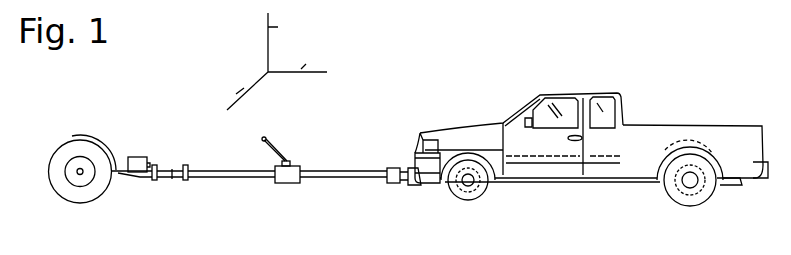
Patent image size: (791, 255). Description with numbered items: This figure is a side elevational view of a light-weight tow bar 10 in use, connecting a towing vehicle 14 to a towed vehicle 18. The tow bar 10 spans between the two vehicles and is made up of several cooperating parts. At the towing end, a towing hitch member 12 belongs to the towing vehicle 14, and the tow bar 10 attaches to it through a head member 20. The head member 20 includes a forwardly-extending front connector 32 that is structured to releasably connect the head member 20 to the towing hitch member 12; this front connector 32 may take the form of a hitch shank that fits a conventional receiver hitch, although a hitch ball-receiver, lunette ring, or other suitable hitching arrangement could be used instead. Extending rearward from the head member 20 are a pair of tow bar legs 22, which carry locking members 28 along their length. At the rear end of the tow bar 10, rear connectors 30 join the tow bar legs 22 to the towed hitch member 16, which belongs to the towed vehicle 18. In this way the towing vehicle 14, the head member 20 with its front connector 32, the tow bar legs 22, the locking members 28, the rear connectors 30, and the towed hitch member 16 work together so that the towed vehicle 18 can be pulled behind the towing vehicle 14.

The tow bar 10 is at (381, 64).
The towing hitch member 12 is at (139, 180).
The towing vehicle 14 is at (148, 105).
The towed hitch member 16 is at (417, 185).
The towed vehicle 18 is at (553, 152).
The head member 20 is at (178, 181).
The tow bar legs 22 is at (315, 197).
The locking members 28 is at (298, 165).
The rear connectors 30 is at (387, 185).
The front connector 32 is at (164, 167).